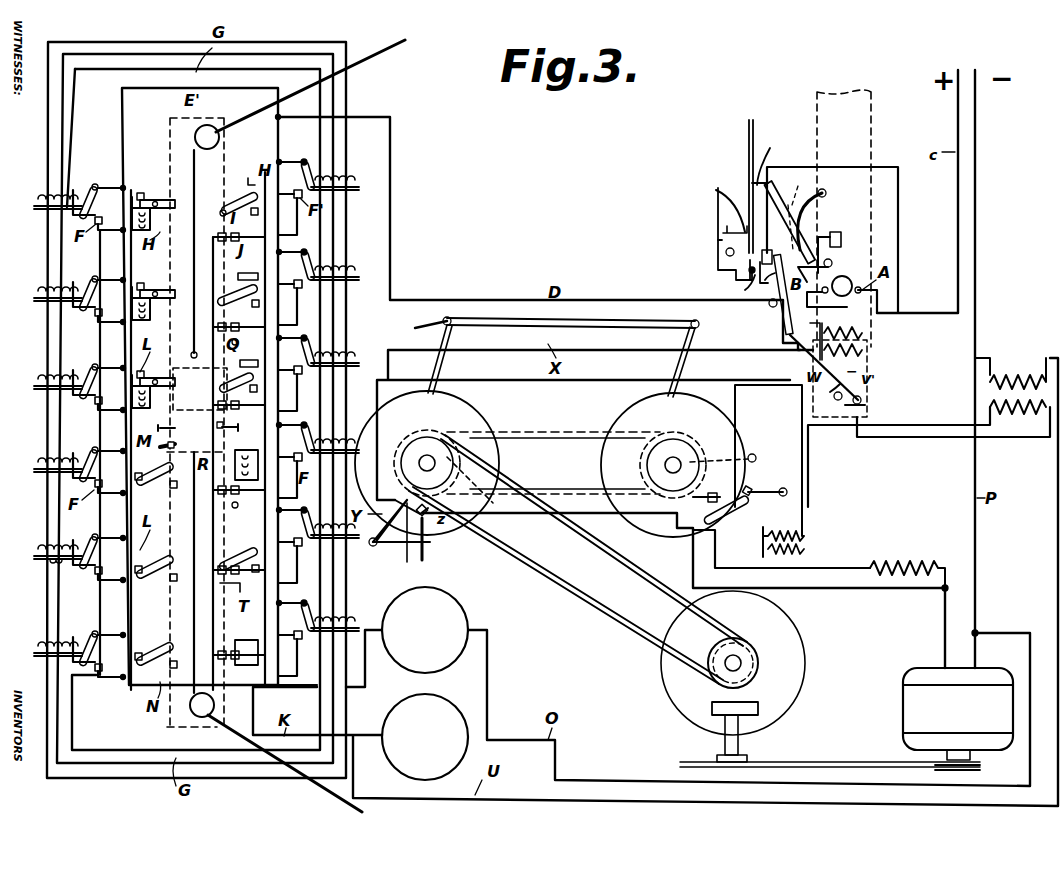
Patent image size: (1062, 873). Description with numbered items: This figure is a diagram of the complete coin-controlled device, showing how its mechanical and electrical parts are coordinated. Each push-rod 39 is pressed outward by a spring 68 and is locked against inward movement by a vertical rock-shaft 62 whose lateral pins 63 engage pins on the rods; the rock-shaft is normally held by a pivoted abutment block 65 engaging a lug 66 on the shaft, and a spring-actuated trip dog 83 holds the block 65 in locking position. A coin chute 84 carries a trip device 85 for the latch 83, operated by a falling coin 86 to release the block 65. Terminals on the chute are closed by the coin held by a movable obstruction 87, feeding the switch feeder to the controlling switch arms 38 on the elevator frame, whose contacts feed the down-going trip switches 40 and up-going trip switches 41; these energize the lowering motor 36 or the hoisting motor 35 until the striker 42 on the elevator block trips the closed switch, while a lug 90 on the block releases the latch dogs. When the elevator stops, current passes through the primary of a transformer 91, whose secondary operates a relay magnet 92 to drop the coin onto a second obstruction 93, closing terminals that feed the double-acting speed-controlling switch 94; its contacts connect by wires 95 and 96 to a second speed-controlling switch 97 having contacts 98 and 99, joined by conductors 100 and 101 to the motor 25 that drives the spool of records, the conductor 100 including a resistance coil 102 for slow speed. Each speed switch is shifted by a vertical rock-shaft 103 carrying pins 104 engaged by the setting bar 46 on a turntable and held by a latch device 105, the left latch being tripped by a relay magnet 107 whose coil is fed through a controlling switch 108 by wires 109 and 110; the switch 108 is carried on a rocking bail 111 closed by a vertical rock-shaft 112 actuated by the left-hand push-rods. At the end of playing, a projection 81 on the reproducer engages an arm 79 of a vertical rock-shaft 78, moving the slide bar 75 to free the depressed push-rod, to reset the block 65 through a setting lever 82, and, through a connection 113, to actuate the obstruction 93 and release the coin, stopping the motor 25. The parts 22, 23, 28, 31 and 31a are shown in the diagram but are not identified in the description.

The driven pulley 22 is at (733, 663).
The pulley stand 23 is at (748, 704).
The motor 25 is at (958, 719).
The controller box 28 is at (193, 410).
The shaft 31 is at (262, 110).
The shaft bearing 31a is at (195, 138).
The hoisting motor 35 is at (425, 630).
The lowering motor 36 is at (425, 737).
The controlling switch arm 38 is at (100, 178).
The push-rod 39 is at (350, 192).
The down-going elevator trip switch 40 is at (222, 212).
The up-going elevator trip switch 41 is at (158, 198).
The striker 42 is at (185, 442).
The setting bar 46 is at (402, 516).
The vertical rock-shaft 62 is at (746, 136).
The lateral pin 63 is at (718, 214).
The abutment block 65 is at (786, 178).
The lug 66 is at (764, 153).
The spring 68 is at (60, 566).
The slidable bar 75 is at (578, 328).
The vertical rock-shaft 78 is at (447, 318).
The arm 79 is at (436, 358).
The projection 81 is at (414, 335).
The setting lever 82 is at (770, 294).
The trip dog 83 is at (832, 265).
The coin chute 84 is at (844, 218).
The trip device 85 is at (841, 232).
The coin 86 is at (834, 290).
The movable obstruction 87 is at (836, 333).
The lug 90 is at (199, 428).
The transformer 91 is at (1010, 382).
The relay magnet 92 is at (853, 378).
The second obstruction 93 is at (866, 403).
The speed-controlling switch 94 is at (408, 546).
The connection 95 is at (435, 461).
The connection 96 is at (618, 506).
The second speed-controlling switch 97 is at (743, 506).
The contact 98 is at (705, 535).
The contact 99 is at (673, 465).
The conductor 100 is at (826, 568).
The conductor 101 is at (832, 588).
The resistance coil 102 is at (900, 562).
The vertical rock-shaft 103 is at (581, 522).
The lug or pin 104 is at (567, 501).
The latch device 105 is at (428, 556).
The relay magnet 107 is at (803, 537).
The controlling switch 108 is at (745, 288).
The wire 109 is at (898, 186).
The wire 110 is at (803, 450).
The rocking bail 111 is at (724, 268).
The vertical rock-shaft 112 is at (718, 220).
The connection 113 is at (799, 367).